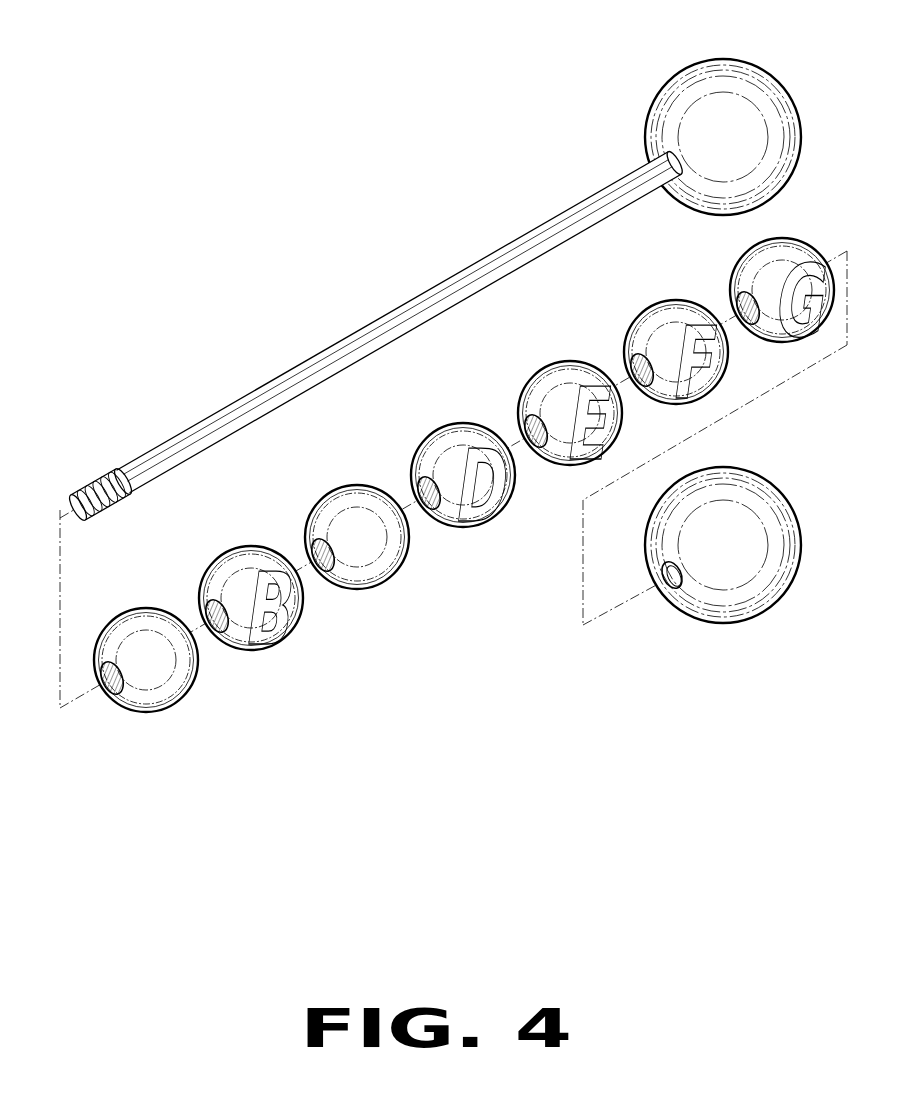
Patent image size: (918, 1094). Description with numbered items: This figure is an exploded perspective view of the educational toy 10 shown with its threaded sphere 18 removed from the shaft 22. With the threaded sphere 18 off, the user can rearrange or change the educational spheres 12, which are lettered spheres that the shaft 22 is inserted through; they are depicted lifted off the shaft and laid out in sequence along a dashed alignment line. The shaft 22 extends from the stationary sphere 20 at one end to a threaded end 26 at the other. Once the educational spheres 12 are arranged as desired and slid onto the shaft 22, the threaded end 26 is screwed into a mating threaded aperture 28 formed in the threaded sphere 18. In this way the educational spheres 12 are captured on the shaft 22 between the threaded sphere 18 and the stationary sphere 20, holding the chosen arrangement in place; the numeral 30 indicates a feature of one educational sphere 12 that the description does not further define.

The educational toy 10 is at (331, 109).
The educational spheres 12 is at (158, 690).
The threaded sphere 18 is at (681, 592).
The stationary sphere 20 is at (683, 113).
The shaft 22 is at (343, 277).
The threaded end 26 is at (123, 486).
The threaded aperture 28 is at (672, 585).
The hole in lettered ball 30 is at (318, 552).